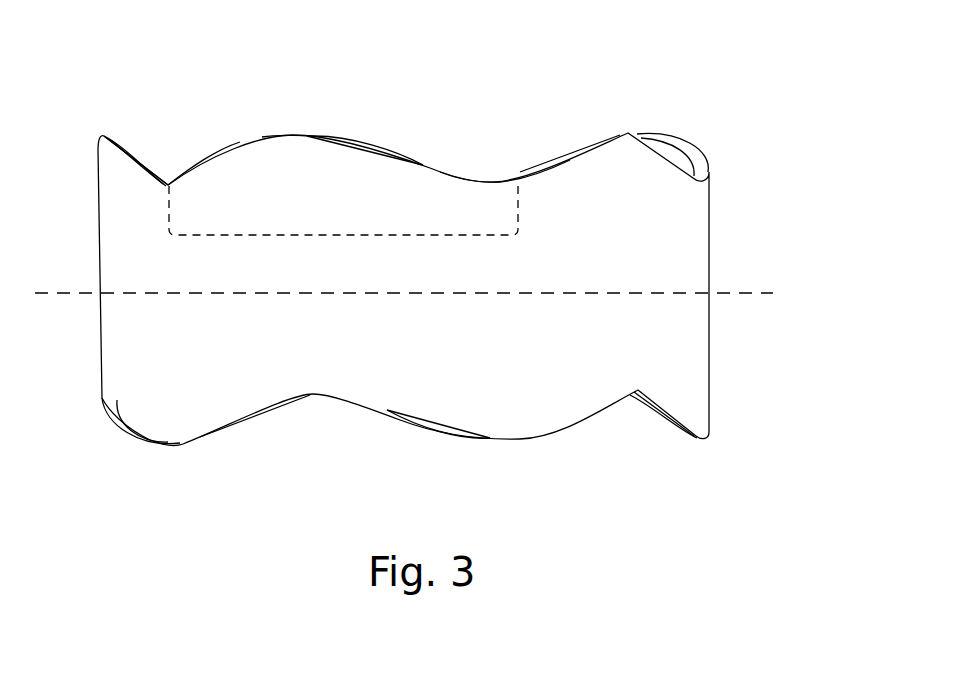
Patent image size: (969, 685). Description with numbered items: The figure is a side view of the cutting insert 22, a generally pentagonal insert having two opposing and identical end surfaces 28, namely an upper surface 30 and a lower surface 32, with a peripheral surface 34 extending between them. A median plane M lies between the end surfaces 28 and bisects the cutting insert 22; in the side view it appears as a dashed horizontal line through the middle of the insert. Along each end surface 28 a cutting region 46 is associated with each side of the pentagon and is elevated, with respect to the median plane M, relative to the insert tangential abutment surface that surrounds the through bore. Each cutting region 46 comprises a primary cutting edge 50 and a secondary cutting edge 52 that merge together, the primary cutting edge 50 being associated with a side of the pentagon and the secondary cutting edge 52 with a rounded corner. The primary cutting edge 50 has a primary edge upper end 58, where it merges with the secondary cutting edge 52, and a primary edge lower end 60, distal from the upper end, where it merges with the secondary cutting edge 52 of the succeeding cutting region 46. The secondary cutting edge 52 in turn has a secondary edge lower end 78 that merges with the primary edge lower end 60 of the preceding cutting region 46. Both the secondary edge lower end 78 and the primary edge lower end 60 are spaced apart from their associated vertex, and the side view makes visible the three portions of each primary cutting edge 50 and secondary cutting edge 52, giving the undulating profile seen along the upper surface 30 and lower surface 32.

The cutting insert 22 is at (439, 225).
The end surfaces 28 is at (377, 107).
The upper surface 30 is at (666, 150).
The lower surface 32 is at (656, 410).
The peripheral surface 34 is at (667, 220).
The cutting region 46 is at (313, 236).
The primary cutting edge 50 is at (461, 172).
The secondary cutting edge 52 is at (216, 155).
The primary edge upper end 58 is at (282, 133).
The primary edge lower end 60 is at (518, 180).
The secondary edge lower end 78 is at (168, 183).
The median plane M is at (741, 291).